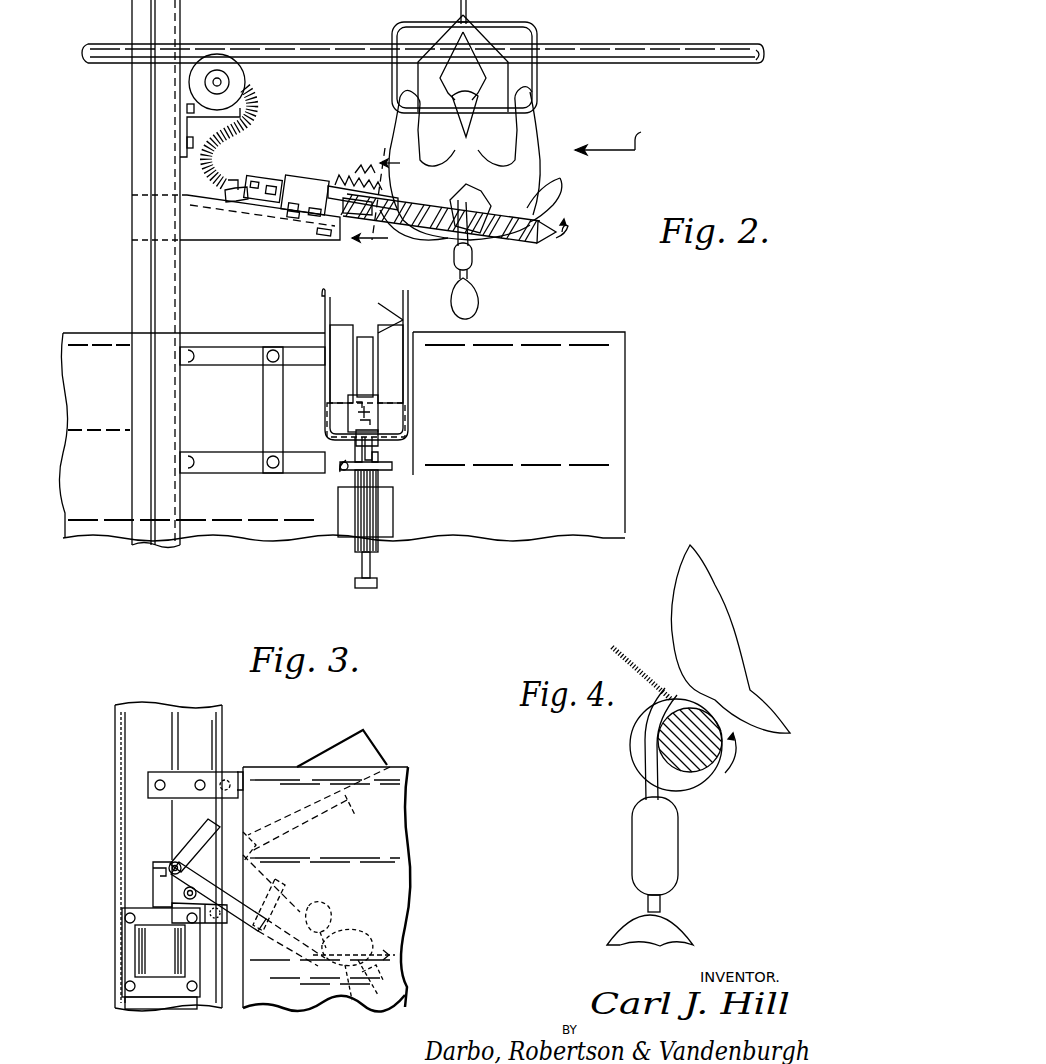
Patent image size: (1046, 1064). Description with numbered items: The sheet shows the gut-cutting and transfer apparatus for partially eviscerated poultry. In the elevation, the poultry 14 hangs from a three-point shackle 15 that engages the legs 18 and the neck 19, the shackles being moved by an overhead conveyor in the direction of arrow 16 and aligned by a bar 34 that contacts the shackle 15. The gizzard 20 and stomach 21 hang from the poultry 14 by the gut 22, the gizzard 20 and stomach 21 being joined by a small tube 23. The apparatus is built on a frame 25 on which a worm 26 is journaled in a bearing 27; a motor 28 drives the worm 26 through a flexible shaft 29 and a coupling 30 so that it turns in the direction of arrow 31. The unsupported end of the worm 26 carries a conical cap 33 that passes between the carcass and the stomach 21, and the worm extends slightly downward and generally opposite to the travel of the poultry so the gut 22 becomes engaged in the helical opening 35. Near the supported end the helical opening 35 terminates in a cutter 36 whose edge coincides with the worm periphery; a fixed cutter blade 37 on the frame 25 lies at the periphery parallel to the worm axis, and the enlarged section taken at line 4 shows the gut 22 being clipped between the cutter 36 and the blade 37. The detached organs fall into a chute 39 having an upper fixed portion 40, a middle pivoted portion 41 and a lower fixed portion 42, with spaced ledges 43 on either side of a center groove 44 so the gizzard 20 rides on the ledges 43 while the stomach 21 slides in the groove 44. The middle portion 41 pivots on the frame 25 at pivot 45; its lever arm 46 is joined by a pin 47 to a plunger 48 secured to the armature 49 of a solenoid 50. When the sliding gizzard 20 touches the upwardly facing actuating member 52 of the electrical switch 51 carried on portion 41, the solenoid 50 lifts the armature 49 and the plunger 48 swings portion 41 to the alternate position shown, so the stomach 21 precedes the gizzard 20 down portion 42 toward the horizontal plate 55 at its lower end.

In FIG. 2, the section line 4- 4 is at (376, 198).
In FIG. 2, the poultry 14 is at (538, 156).
In FIG. 2, the shackle 15 is at (538, 80).
In FIG. 2, the arrow indicating direction of movement 16 is at (617, 135).
In FIG. 2, the legs 18 is at (396, 126).
In FIG. 2, the neck 19 is at (477, 134).
In FIG. 2, the gizzard 20 is at (478, 294).
In FIG. 3, the gizzard 20 is at (340, 912).
In FIG. 4, the gizzard 20 is at (685, 935).
In FIG. 2, the stomach 21 is at (472, 257).
In FIG. 3, the stomach 21 is at (392, 980).
In FIG. 4, the stomach 21 is at (676, 846).
In FIG. 2, the gut 22 is at (470, 212).
In FIG. 4, the gut 22 is at (648, 770).
In FIG. 2, the small tube 23 is at (467, 278).
In FIG. 3, the small tube 23 is at (358, 940).
In FIG. 4, the small tube 23 is at (660, 906).
In FIG. 2, the frame 25 is at (130, 290).
In FIG. 3, the frame 25 is at (115, 760).
In FIG. 2, the worm 26 is at (532, 242).
In FIG. 4, the worm 26 is at (630, 765).
In FIG. 2, the bearing 27 is at (298, 180).
In FIG. 2, the motor 28 is at (217, 54).
In FIG. 2, the flexible shaft 29 is at (252, 122).
In FIG. 2, the coupling 30 is at (258, 180).
In FIG. 2, the arrow indicating direction of worm rotation 31 is at (570, 228).
In FIG. 4, the arrow indicating direction of worm rotation 31 is at (731, 762).
In FIG. 2, the conical cap 33 is at (552, 216).
In FIG. 2, the bar 34 is at (693, 44).
In FIG. 2, the helical opening 35 is at (420, 238).
In FIG. 4, the helical opening 35 is at (638, 722).
In FIG. 4, the cutter 36 is at (690, 705).
In FIG. 2, the fixed cutter blade 37 is at (378, 204).
In FIG. 4, the fixed cutter blade 37 is at (657, 670).
In FIG. 2, the chute 39 is at (324, 298).
In FIG. 3, the chute 39 is at (360, 736).
In FIG. 2, the upper fixed portion 40 is at (383, 315).
In FIG. 3, the upper fixed portion 40 is at (342, 748).
In FIG. 2, the middle pivoted portion 41 is at (380, 404).
In FIG. 3, the middle pivoted portion 41 is at (217, 879).
In FIG. 2, the lower fixed portion 42 is at (395, 456).
In FIG. 3, the lower fixed portion 42 is at (300, 893).
In FIG. 2, the ledges 43 is at (345, 325).
In FIG. 3, the ledges 43 is at (378, 748).
In FIG. 2, the center groove 44 is at (364, 340).
In FIG. 3, the center groove 44 is at (350, 805).
In FIG. 2, the pivot 45 is at (340, 468).
In FIG. 3, the pivot 45 is at (180, 900).
In FIG. 2, the lever arm 46 is at (364, 440).
In FIG. 3, the lever arm 46 is at (183, 892).
In FIG. 2, the pin 47 is at (377, 455).
In FIG. 3, the pin 47 is at (171, 862).
In FIG. 2, the plunger 48 is at (358, 469).
In FIG. 3, the plunger 48 is at (153, 864).
In FIG. 2, the armature 49 is at (378, 582).
In FIG. 3, the armature 49 is at (150, 1004).
In FIG. 2, the solenoid 50 is at (393, 515).
In FIG. 3, the solenoid 50 is at (143, 952).
In FIG. 2, the electrical switch 51 is at (376, 394).
In FIG. 3, the electrical switch 51 is at (207, 832).
In FIG. 2, the switch actuating member 52 is at (345, 412).
In FIG. 3, the switch actuating member 52 is at (261, 831).
In FIG. 3, the horizontal plate 55 is at (404, 946).